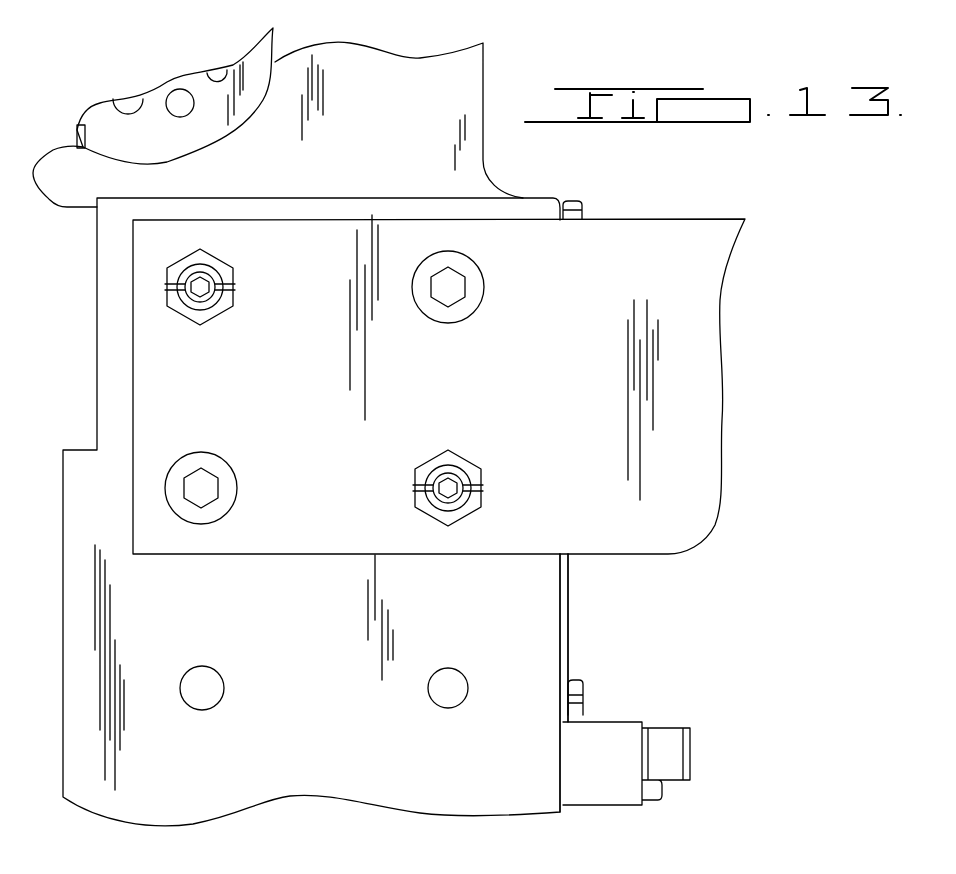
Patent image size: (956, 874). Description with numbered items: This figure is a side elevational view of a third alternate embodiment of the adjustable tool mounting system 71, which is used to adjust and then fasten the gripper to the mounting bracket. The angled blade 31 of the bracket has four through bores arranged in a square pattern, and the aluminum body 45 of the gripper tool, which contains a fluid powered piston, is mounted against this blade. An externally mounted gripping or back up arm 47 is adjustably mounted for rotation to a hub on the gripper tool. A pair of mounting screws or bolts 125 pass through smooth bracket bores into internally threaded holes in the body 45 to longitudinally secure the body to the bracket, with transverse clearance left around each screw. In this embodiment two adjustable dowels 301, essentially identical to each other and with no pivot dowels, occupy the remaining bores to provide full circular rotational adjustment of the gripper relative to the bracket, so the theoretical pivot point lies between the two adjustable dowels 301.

The gripping or back up arm 47 is at (88, 165).
The angled blade 31 is at (700, 420).
The mounting screws or bolts 125 is at (483, 297).
The adjustable dowels 301 is at (235, 305).
The aluminum body 45 is at (543, 606).
The adjustable tool mounting system 71 is at (705, 557).